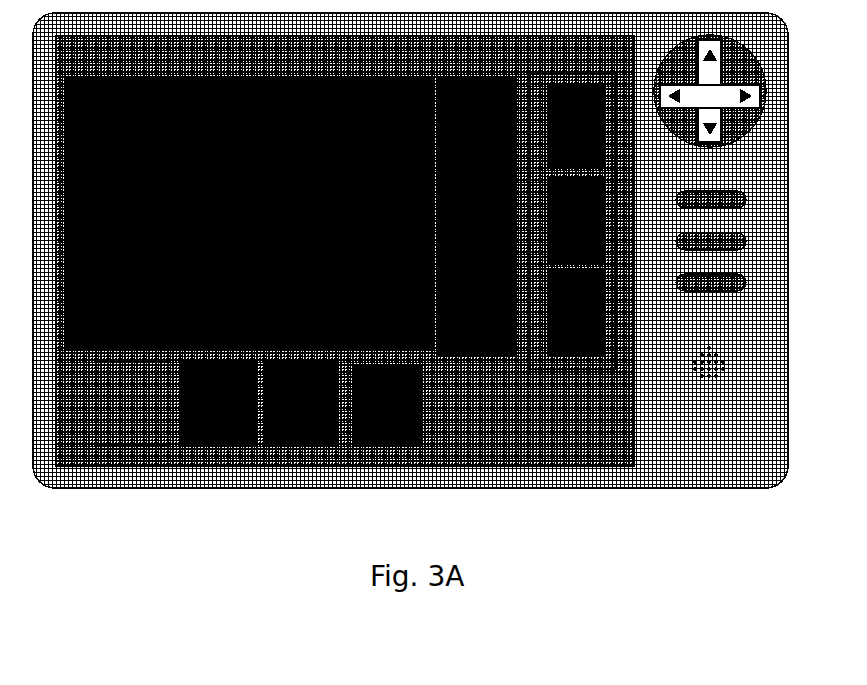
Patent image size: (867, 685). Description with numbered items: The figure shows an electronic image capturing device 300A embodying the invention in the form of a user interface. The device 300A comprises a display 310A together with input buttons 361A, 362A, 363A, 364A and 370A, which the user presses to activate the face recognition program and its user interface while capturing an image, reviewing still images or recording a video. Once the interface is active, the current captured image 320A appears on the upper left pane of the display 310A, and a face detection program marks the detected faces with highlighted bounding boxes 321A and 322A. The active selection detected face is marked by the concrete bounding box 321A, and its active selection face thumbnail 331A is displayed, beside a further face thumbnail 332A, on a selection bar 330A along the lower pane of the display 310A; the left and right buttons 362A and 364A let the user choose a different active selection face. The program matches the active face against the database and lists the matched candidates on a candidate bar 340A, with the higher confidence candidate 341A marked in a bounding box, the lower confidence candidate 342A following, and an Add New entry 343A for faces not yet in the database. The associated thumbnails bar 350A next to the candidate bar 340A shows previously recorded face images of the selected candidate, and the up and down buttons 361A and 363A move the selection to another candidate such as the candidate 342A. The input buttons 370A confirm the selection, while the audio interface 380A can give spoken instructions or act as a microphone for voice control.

The electronic image capturing device 300A is at (423, 250).
The display 310A is at (345, 251).
The current captured image 320A is at (249, 199).
The concrete bounding box 321A is at (343, 220).
The highlighted bounding box 322A is at (148, 243).
The selection bar 330A is at (182, 403).
The active selection face thumbnail 331A is at (388, 419).
The candidate face image 332A is at (218, 414).
The candidate bar 340A is at (477, 214).
The higher confidence candidate 341A is at (472, 125).
The lower confidence candidate 342A is at (472, 215).
The Add New entry 343A is at (472, 308).
The associated thumbnails bar 350A is at (586, 212).
The up button 361A is at (710, 90).
The left button 362A is at (666, 106).
The down button 363A is at (711, 143).
The right button 364A is at (768, 107).
The input buttons 370A is at (726, 241).
The audio interface 380A is at (727, 354).